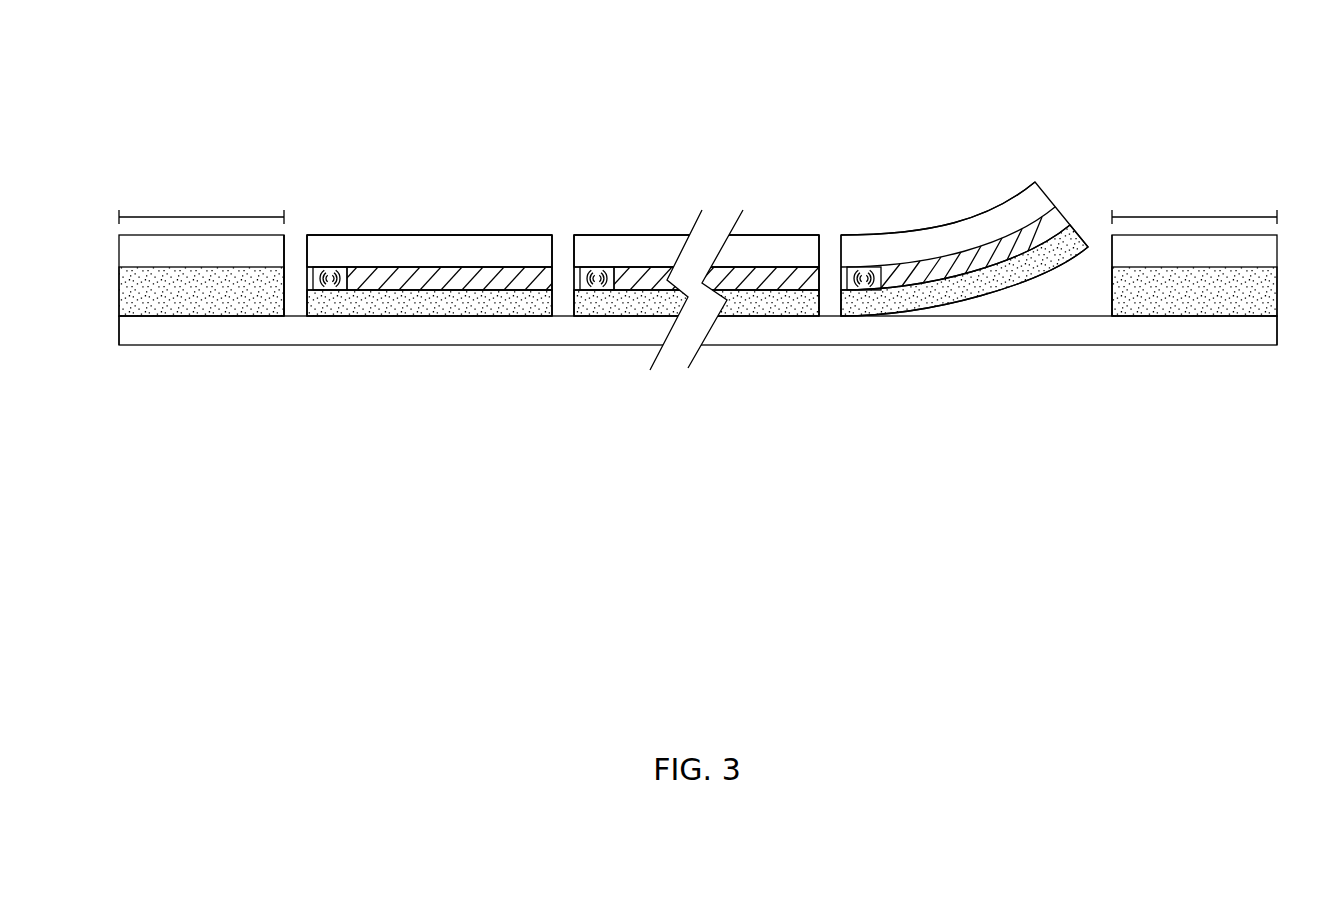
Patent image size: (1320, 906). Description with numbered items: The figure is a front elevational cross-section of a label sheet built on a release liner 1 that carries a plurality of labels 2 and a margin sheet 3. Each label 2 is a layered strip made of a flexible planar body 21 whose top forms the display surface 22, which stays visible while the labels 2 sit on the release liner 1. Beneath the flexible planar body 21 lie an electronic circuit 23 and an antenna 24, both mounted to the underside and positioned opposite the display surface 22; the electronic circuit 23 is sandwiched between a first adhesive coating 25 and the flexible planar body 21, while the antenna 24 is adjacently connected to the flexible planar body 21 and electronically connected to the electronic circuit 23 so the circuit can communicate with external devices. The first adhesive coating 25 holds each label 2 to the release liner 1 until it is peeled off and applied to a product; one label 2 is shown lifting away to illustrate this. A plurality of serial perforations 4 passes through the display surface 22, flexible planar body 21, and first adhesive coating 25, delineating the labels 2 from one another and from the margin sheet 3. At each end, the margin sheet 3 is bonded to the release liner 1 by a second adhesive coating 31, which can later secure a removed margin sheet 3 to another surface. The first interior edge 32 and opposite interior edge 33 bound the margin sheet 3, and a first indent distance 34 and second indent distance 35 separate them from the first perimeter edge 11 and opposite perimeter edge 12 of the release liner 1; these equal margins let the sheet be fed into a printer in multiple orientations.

The release liner 1 is at (325, 335).
The first perimeter edge 11 is at (119, 330).
The opposite perimeter edge 12 is at (1277, 330).
The label 2 is at (451, 198).
The flexible planar body 21 is at (360, 248).
The display surface 22 is at (400, 237).
The electronic circuit 23 is at (412, 288).
The antenna 24 is at (340, 283).
The first adhesive coating 25 is at (488, 312).
The margin sheet 3 is at (156, 170).
The second adhesive coating 31 is at (190, 297).
The first interior edge 32 is at (284, 297).
The opposite interior edge 33 is at (1107, 302).
The first indent distance 34 is at (197, 217).
The second indent distance 35 is at (1188, 217).
The serial perforation 4 is at (296, 201).